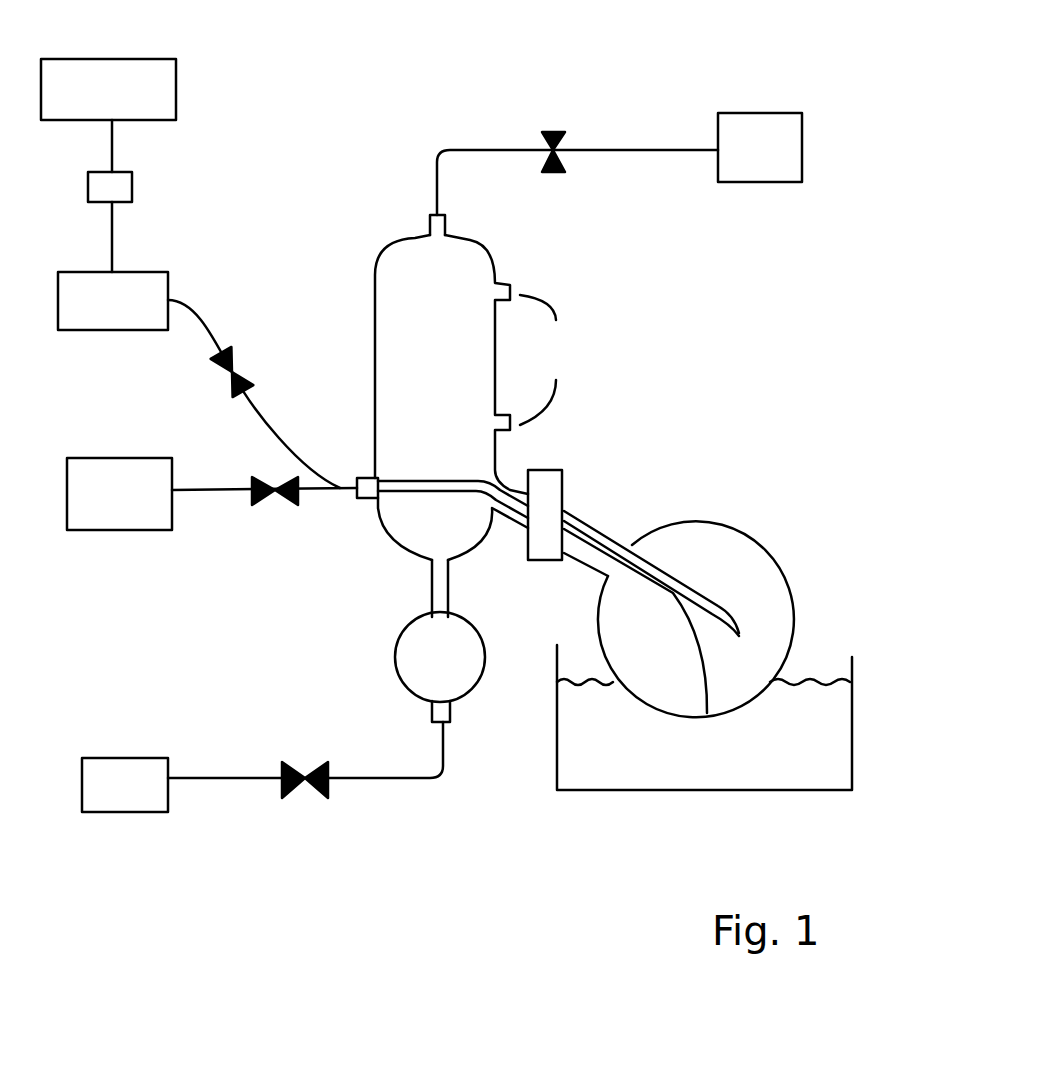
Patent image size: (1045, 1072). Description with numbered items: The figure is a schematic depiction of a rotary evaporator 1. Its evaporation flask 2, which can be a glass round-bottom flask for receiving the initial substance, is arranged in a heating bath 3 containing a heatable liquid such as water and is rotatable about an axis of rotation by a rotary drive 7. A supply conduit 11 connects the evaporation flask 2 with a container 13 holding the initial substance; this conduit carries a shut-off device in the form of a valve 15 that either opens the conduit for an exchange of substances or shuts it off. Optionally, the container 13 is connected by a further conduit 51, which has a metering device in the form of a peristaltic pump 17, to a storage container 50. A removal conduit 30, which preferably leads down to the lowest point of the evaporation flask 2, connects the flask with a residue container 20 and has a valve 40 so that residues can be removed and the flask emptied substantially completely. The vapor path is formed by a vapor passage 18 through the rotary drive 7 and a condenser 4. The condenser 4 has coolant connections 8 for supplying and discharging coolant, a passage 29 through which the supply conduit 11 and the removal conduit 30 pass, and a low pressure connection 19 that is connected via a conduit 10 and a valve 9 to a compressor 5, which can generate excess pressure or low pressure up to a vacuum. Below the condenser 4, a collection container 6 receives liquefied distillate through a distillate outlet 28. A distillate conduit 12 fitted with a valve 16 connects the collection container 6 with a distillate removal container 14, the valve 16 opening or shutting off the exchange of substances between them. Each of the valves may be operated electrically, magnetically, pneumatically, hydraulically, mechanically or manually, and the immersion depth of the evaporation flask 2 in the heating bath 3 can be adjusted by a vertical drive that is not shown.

The rotary evaporator 1 is at (775, 350).
The evaporation flask 2 is at (748, 572).
The heating bath 3 is at (828, 742).
The condenser 4 is at (390, 345).
The compressor 5 is at (762, 137).
The collection container 6 is at (407, 655).
The rotary drive 7 is at (562, 492).
The coolant connections 8 is at (541, 360).
The valve 9 is at (553, 118).
The conduit 10 is at (477, 143).
The supply conduit 11 is at (195, 315).
The distillate conduit 12 is at (403, 780).
The container 13 is at (150, 288).
The distillate removal container 14 is at (132, 798).
The valve 15 is at (222, 375).
The valve 16 is at (295, 762).
The peristaltic pump 17 is at (123, 185).
The vapor passage 18 is at (598, 530).
The low pressure connection 19 is at (433, 231).
The residue container 20 is at (105, 513).
The distillate outlet 28 is at (442, 588).
The passage 29 is at (368, 480).
The removal conduit 30 is at (207, 490).
The valve 40 is at (278, 502).
The storage container 50 is at (162, 90).
The conduit 51 is at (112, 228).